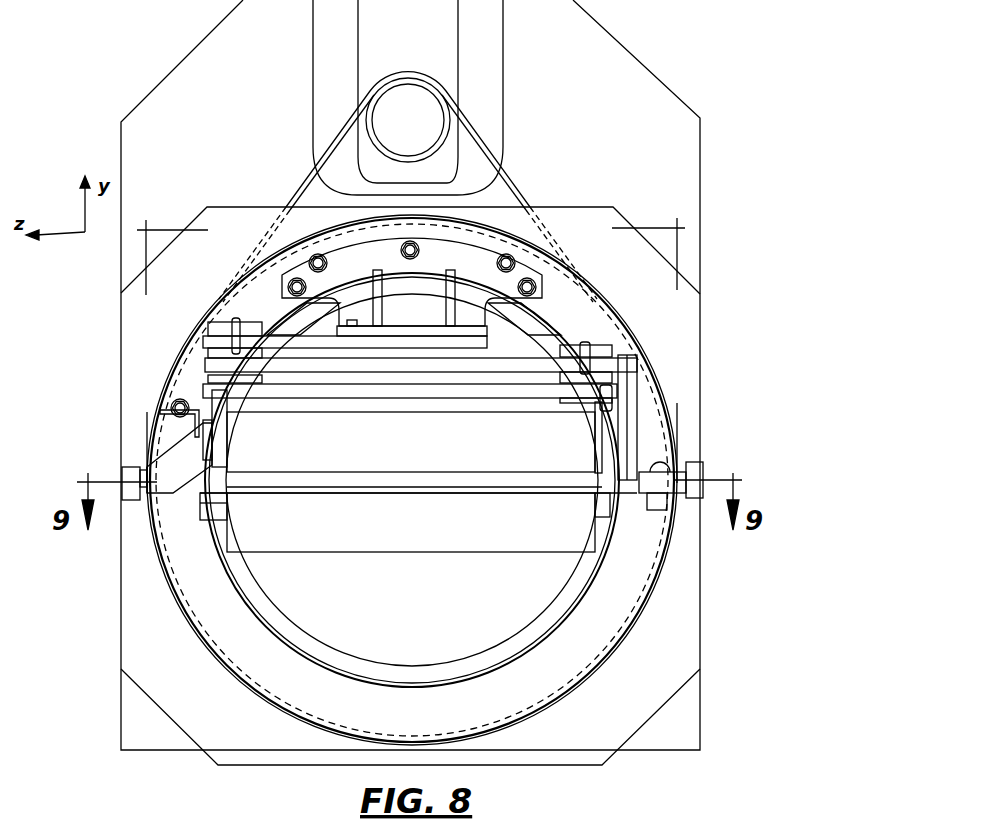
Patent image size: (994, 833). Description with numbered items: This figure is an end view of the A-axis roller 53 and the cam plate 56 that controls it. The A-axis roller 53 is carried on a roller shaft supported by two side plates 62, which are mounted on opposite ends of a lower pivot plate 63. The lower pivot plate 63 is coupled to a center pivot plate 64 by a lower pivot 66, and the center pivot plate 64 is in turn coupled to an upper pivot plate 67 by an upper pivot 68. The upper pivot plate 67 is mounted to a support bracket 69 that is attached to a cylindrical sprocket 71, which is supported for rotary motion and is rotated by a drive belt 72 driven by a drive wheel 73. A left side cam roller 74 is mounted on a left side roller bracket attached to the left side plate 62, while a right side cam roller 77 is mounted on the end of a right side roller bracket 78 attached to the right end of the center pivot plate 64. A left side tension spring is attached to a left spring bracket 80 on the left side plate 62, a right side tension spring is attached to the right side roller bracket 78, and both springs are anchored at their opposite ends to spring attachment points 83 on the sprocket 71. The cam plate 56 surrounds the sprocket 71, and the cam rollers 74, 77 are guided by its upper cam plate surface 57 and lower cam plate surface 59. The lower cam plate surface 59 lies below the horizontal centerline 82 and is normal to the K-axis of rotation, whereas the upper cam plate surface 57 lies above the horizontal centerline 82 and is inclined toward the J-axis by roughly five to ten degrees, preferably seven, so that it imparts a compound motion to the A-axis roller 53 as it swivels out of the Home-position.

The A-axis roller 53 is at (425, 528).
The cam plate 56 is at (705, 364).
The upper cam plate surface 57 is at (680, 387).
The lower cam plate surface 59 is at (664, 605).
The side plates 62 is at (220, 432).
The lower pivot plate 63 is at (492, 392).
The center pivot plate 64 is at (538, 366).
The lower pivot 66 is at (602, 347).
The upper pivot plate 67 is at (297, 340).
The upper pivot 68 is at (232, 322).
The support bracket 69 is at (414, 286).
The cylindrical sprocket 71 is at (565, 300).
The drive belt 72 is at (508, 185).
The drive wheel 73 is at (412, 100).
The left side cam roller 74 is at (128, 472).
The right side cam roller 77 is at (693, 470).
The right side roller bracket 78 is at (632, 437).
The left spring bracket 80 is at (193, 400).
The horizontal centerline 82 is at (683, 453).
The spring attachment points 83 is at (178, 427).